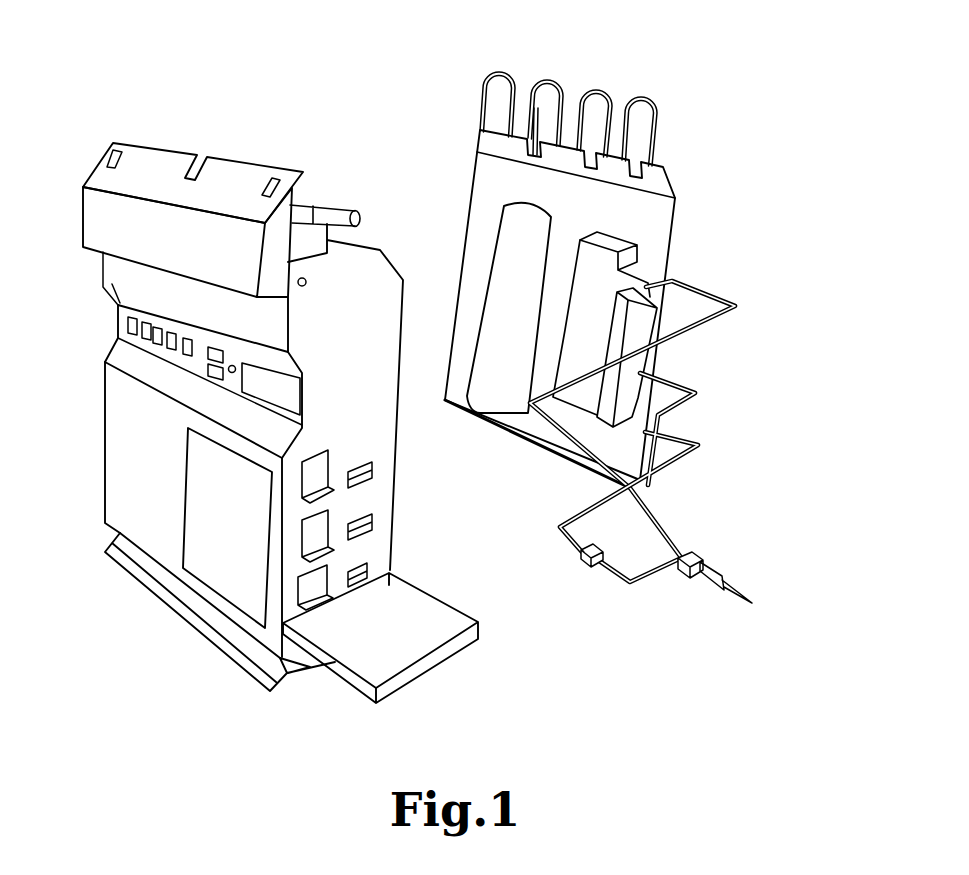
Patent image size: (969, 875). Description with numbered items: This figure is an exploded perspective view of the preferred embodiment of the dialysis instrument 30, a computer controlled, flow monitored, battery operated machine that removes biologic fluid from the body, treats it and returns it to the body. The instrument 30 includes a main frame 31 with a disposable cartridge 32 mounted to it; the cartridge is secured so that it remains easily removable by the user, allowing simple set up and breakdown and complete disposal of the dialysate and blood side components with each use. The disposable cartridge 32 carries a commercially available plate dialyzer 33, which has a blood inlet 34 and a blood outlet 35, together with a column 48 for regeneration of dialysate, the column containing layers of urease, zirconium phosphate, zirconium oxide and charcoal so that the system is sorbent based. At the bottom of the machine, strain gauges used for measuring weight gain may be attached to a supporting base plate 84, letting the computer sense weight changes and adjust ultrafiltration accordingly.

The dialysis instrument 30 is at (659, 22).
The main frame 31 is at (378, 280).
The disposable cartridge 32 is at (662, 215).
The plate dialyzer 33 is at (612, 272).
The blood inlet 34 is at (657, 473).
The blood outlet 35 is at (647, 281).
The column 48 is at (502, 278).
The supporting base plate 84 is at (305, 672).